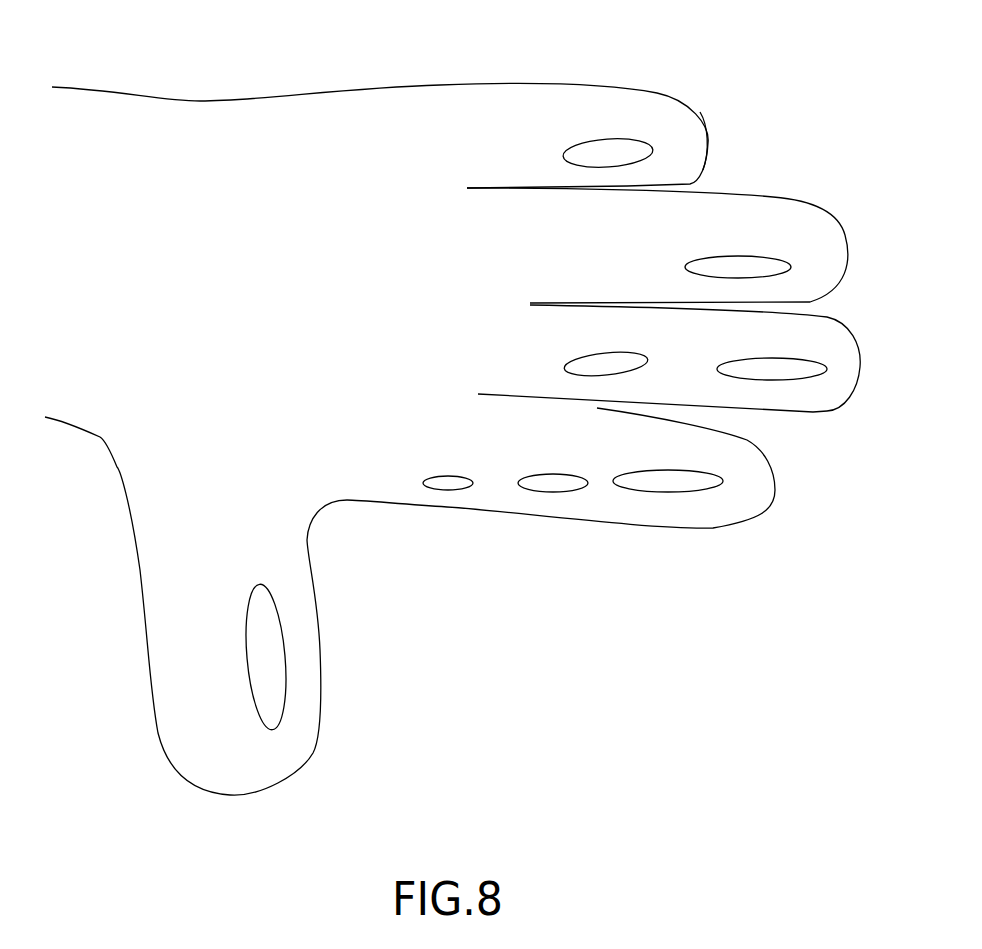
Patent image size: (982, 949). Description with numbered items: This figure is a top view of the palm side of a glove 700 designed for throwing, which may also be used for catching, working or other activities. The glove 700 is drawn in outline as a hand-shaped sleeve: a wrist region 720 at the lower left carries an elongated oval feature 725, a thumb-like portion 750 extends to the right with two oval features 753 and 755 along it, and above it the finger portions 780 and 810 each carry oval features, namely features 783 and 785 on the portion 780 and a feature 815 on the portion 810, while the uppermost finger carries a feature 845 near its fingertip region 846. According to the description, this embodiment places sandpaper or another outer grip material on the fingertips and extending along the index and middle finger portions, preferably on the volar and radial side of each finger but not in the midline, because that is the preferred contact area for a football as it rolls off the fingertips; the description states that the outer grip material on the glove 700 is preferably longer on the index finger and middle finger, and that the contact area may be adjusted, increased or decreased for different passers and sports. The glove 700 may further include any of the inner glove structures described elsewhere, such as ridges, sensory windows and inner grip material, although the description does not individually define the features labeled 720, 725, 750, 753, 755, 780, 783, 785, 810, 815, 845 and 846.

The glove 700 is at (730, 56).
The wrist portion 720 is at (167, 533).
The wrist sensor 725 is at (265, 627).
The thumb portion 750 is at (760, 502).
The thumb sensor 753 is at (547, 480).
The thumb sensor 755 is at (672, 480).
The finger portion 780 is at (848, 375).
The finger sensor 783 is at (585, 362).
The finger sensor 785 is at (752, 362).
The finger portion 810 is at (827, 235).
The finger sensor 815 is at (708, 263).
The finger sensor 845 is at (583, 148).
The fingertip portion 846 is at (687, 138).